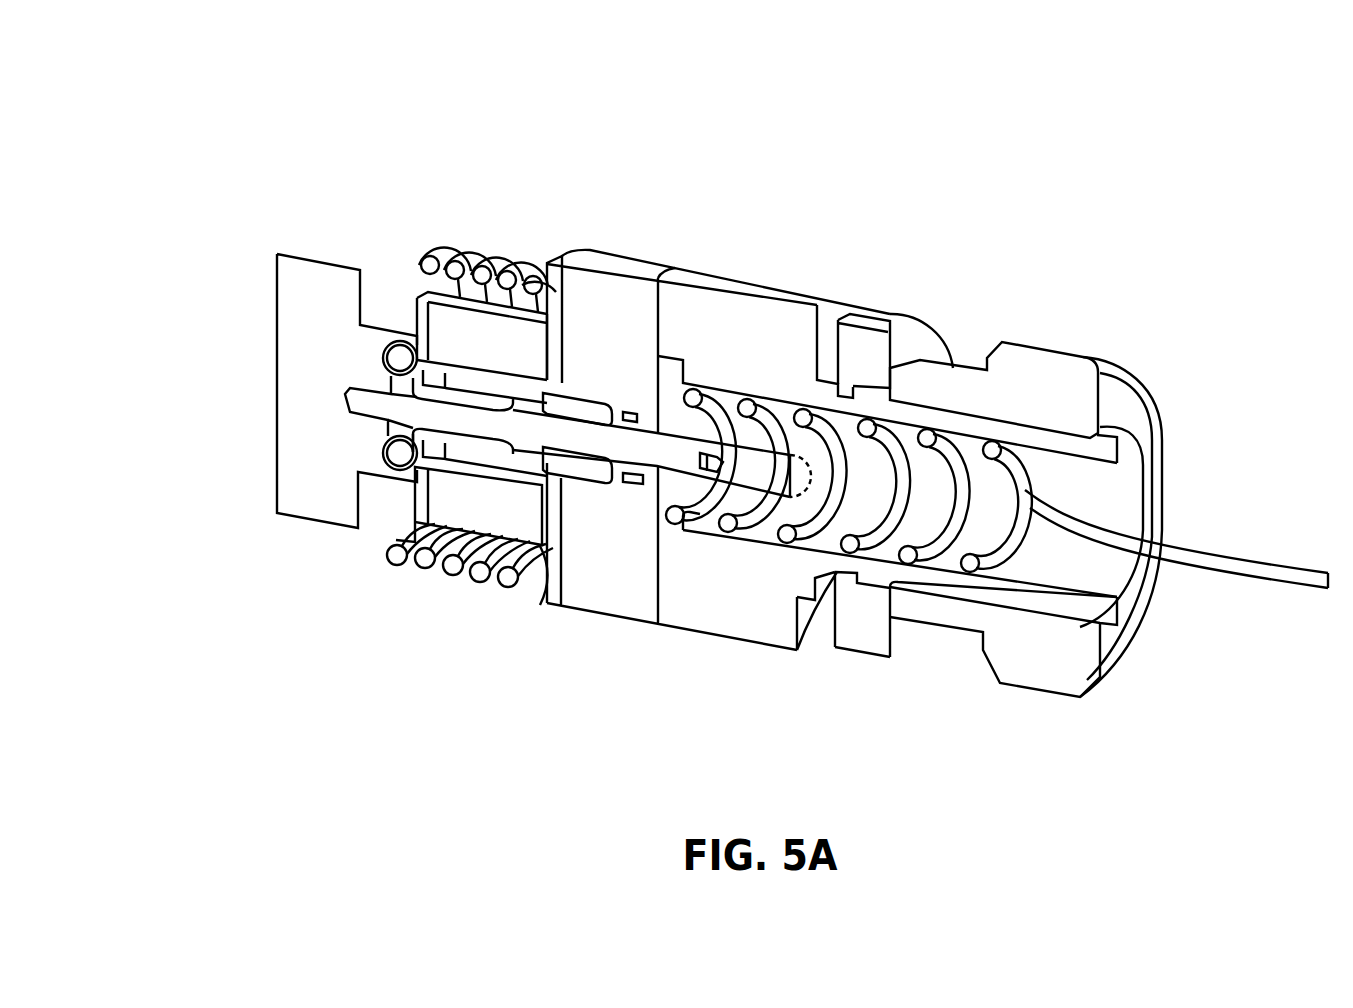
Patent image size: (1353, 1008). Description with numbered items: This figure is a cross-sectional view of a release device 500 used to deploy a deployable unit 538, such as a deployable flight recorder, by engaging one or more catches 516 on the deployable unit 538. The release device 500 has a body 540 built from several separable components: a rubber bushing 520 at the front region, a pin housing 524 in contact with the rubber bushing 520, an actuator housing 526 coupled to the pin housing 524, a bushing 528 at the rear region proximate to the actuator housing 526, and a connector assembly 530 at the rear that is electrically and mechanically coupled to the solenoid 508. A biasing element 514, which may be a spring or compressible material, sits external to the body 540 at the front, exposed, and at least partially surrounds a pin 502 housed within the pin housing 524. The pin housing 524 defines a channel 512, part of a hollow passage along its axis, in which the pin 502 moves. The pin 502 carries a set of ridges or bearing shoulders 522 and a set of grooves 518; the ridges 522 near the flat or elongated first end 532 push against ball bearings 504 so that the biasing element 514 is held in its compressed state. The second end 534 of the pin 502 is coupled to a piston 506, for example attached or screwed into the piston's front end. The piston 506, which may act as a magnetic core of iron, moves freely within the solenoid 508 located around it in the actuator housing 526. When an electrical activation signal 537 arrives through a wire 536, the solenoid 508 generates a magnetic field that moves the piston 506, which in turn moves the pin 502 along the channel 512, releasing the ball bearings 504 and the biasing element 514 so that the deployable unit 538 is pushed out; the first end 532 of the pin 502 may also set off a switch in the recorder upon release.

The release device 500 is at (967, 322).
The pin 502 is at (631, 453).
The ball bearing 504 is at (396, 356).
The piston 506 is at (771, 466).
The solenoid 508 is at (909, 562).
The channel 512 is at (591, 470).
The biasing element 514 is at (449, 578).
The catch 516 is at (380, 453).
The grooves 518 is at (479, 405).
The rubber bushing 520 is at (503, 335).
The ridges 522 is at (387, 427).
The pin housing 524 is at (600, 337).
The actuator housing 526 is at (759, 352).
The bushing 528 is at (884, 345).
The connector assembly 530 is at (1083, 396).
The first end 532 is at (348, 387).
The second end 534 is at (683, 463).
The wire 536 is at (1192, 548).
The electrical activation signal 537 is at (1295, 588).
The deployable unit 538 is at (275, 357).
The body 540 is at (719, 268).